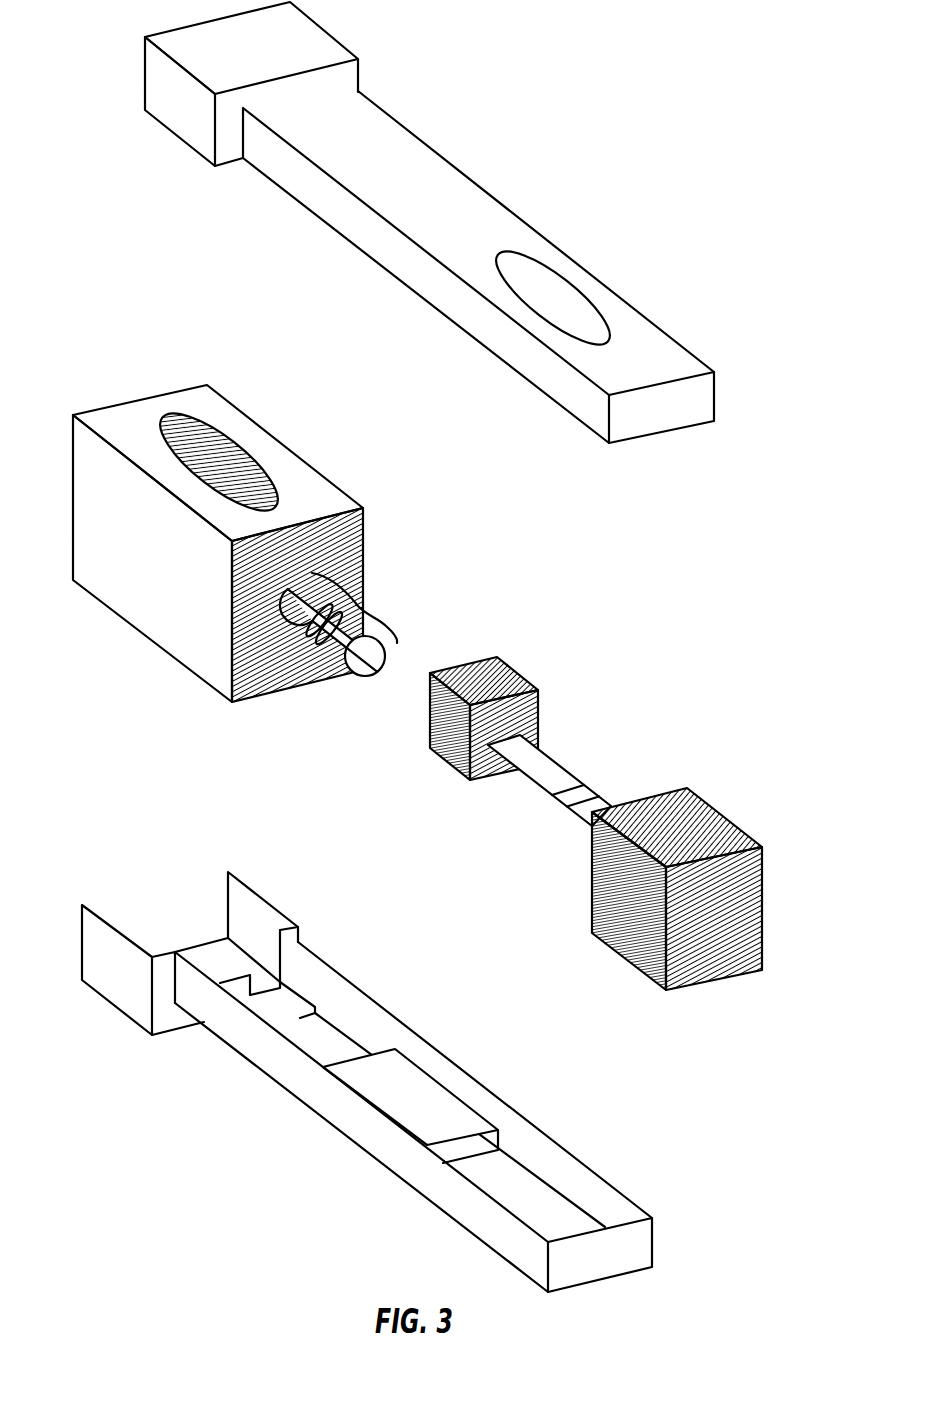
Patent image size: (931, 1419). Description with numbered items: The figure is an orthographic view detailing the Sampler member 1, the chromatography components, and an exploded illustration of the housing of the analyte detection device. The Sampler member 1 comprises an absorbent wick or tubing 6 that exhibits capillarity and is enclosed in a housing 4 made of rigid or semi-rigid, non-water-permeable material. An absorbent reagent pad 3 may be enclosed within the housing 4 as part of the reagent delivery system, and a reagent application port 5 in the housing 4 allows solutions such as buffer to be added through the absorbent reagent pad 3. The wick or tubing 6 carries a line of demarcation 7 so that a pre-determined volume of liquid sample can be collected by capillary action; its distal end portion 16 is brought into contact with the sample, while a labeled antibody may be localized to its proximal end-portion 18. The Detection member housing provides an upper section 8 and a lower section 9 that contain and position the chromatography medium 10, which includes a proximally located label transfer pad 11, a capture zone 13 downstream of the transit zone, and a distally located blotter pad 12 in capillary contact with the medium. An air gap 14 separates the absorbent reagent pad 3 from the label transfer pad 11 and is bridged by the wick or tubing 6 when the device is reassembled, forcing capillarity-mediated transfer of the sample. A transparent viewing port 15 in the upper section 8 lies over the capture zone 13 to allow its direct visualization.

The Sampler member 1 is at (216, 543).
The absorbent reagent pad 3 is at (318, 605).
The housing 4 is at (138, 558).
The reagent application port 5 is at (235, 462).
The absorbent wick or tubing 6 is at (364, 604).
The line of demarcation 7 is at (283, 687).
The upper section 8 is at (463, 222).
The lower section 9 is at (391, 1074).
The chromatography medium 10 is at (549, 771).
The label transfer pad 11 is at (497, 706).
The blotter pad 12 is at (709, 889).
The capture zone 13 is at (608, 779).
The air gap 14 is at (275, 937).
The transparent viewing port 15 is at (566, 296).
The distal end portion 16 is at (321, 688).
The proximal end-portion 18 is at (296, 664).